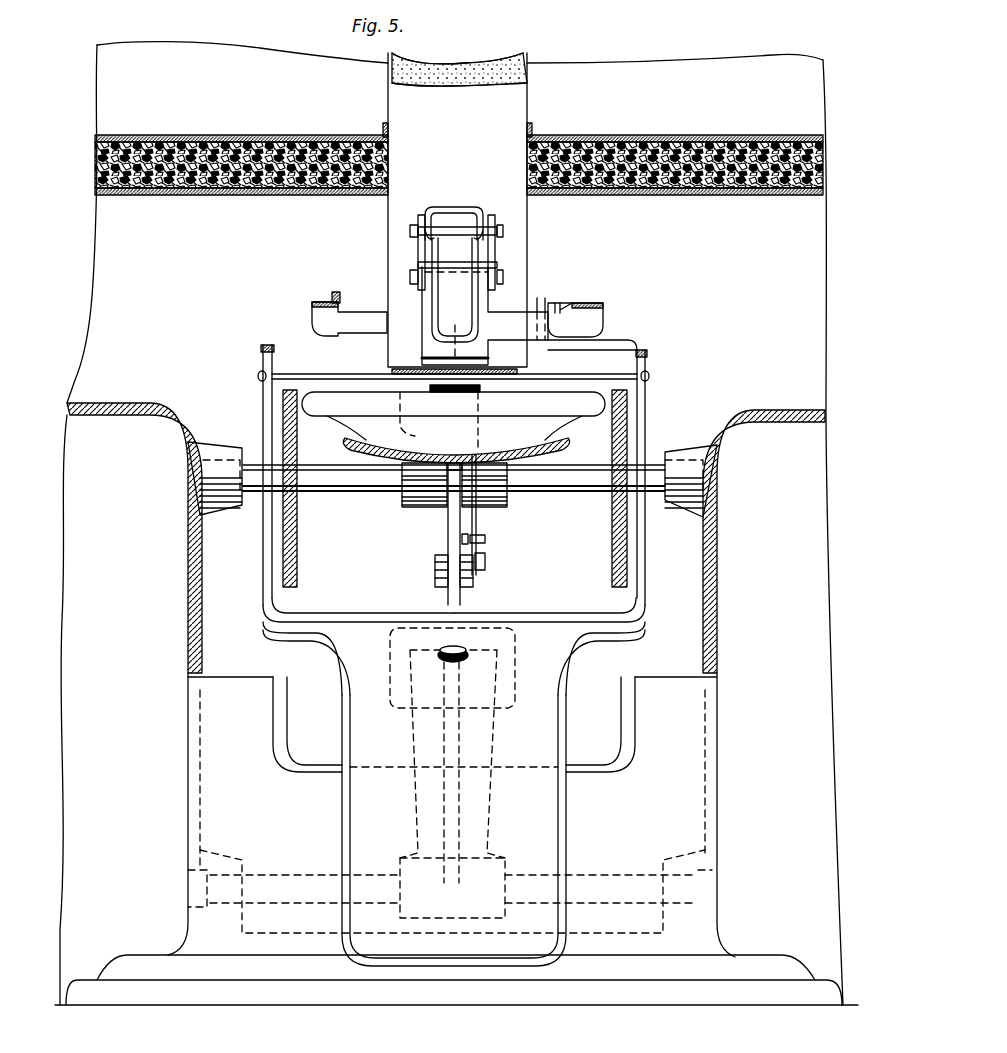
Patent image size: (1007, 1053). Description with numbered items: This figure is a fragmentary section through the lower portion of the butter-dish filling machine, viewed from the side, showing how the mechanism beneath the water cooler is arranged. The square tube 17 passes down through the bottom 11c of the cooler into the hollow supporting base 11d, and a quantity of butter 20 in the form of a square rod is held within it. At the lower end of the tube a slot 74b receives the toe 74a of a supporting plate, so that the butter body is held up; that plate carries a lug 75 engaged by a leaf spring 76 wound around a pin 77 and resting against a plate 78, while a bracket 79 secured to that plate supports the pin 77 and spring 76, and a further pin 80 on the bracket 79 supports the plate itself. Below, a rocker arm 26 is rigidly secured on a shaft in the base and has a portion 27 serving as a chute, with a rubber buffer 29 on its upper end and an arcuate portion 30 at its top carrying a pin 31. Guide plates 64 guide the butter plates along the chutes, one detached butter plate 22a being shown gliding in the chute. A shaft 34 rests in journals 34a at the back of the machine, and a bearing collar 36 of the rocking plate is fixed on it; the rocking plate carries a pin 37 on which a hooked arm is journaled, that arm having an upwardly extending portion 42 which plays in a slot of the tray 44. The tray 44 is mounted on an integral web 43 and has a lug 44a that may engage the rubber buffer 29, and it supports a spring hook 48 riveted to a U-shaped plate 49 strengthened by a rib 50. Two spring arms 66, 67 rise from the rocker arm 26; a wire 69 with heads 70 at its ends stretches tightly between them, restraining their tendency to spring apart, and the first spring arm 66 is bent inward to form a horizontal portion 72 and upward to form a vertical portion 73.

The bottom 11c is at (742, 192).
The supporting base 11d is at (782, 965).
The square tube 17 is at (505, 104).
The butter 20 is at (494, 72).
The butter plate 22a is at (600, 404).
The rocker arm 26 is at (495, 740).
The chute 27 is at (545, 826).
The rubber buffer 29 is at (462, 650).
The arcuate portion 30 is at (440, 530).
The pin 31 is at (486, 539).
The shaft 34 is at (655, 466).
The journals 34a is at (218, 443).
The bearing collar 36 is at (445, 473).
The pin 37 is at (486, 561).
The upwardly extending portion 42 is at (495, 507).
The web 43 is at (450, 488).
The tray 44 is at (343, 443).
The lug 44a is at (428, 492).
The spring hook 48 is at (428, 388).
The plate 49 is at (318, 318).
The rib 50 is at (331, 298).
The guide plates 64 is at (298, 570).
The spring arm 66 is at (646, 535).
The spring arm 67 is at (261, 575).
The wire 69 is at (334, 375).
The heads 70 is at (258, 375).
The horizontal portion 72 is at (608, 343).
The vertical portion 73 is at (546, 303).
The toe 74a is at (458, 334).
The slot 74b is at (488, 370).
The lug 75 is at (421, 349).
The leaf spring 76 is at (431, 312).
The pin 77 is at (502, 230).
The plate 78 is at (456, 214).
The bracket 79 is at (417, 250).
The pin 80 is at (500, 276).